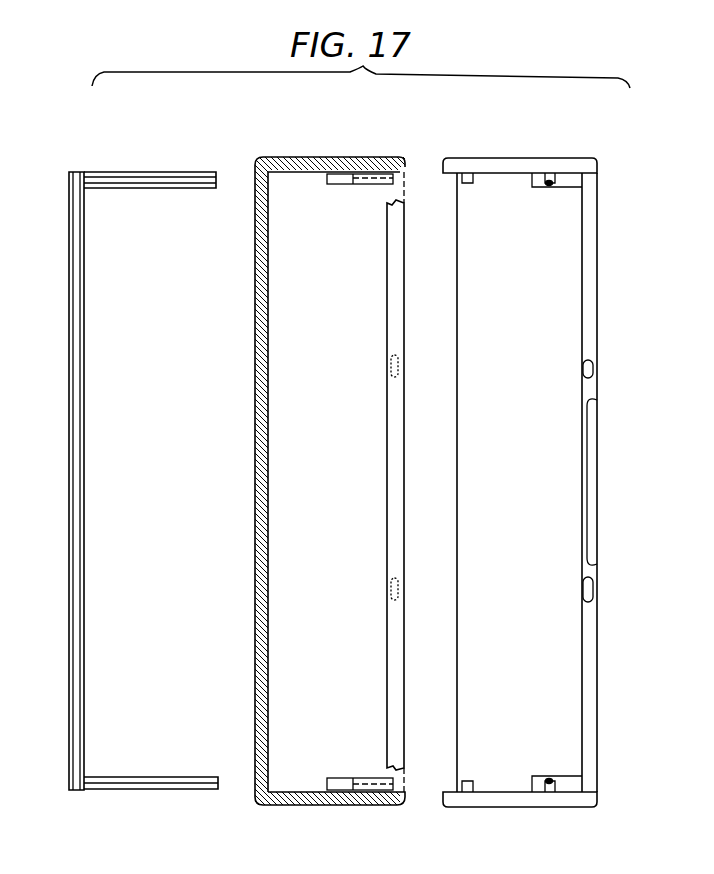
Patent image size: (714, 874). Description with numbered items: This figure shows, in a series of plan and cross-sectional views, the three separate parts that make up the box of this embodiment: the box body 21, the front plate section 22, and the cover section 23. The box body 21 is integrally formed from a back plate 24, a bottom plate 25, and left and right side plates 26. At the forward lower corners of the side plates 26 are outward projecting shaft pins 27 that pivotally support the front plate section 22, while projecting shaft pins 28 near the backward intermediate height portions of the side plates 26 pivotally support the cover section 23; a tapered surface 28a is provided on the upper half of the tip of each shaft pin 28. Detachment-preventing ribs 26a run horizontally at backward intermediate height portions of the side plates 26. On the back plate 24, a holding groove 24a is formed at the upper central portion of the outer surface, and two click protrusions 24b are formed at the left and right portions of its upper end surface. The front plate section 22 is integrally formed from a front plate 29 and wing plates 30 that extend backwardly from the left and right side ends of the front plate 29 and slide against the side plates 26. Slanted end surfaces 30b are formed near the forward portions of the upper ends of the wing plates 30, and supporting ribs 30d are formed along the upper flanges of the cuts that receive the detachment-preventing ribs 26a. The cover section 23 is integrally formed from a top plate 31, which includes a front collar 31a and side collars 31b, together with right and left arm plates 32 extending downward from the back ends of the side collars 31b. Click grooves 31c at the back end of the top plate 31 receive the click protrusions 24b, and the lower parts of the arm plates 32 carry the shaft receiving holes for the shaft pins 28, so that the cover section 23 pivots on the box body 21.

The box body 21 is at (568, 140).
The front plate section 22 is at (190, 140).
The cover section 23 is at (370, 140).
The back plate 24 is at (594, 274).
The holding groove 24a is at (598, 432).
The click protrusion 24b is at (593, 368).
The bottom plate 25 is at (570, 632).
The side plate 26 is at (502, 162).
The detachment-preventing rib 26a is at (534, 182).
The shaft pin 27 is at (470, 184).
The shaft pin 28 is at (557, 178).
The tapered surface 28a is at (548, 188).
The front plate 29 is at (72, 480).
The wing plate 30 is at (106, 172).
The slanted end surface 30b is at (145, 172).
The supporting rib 30d is at (157, 188).
The top plate 31 is at (262, 324).
The front collar 31a is at (262, 430).
The side collar 31b is at (297, 160).
The click groove 31c is at (392, 364).
The arm plate 32 is at (362, 184).